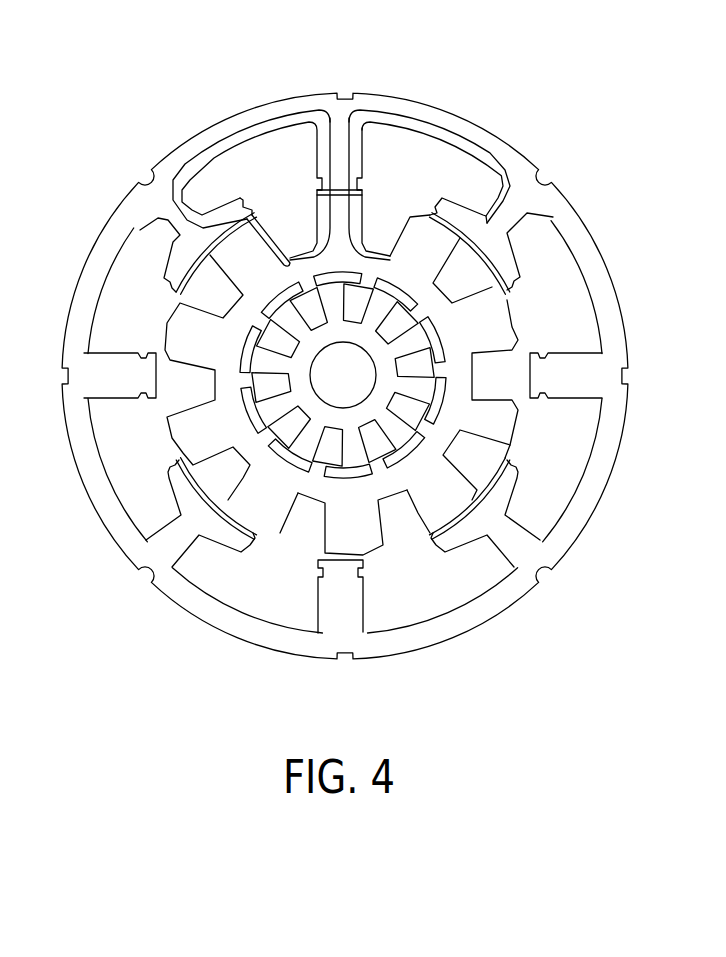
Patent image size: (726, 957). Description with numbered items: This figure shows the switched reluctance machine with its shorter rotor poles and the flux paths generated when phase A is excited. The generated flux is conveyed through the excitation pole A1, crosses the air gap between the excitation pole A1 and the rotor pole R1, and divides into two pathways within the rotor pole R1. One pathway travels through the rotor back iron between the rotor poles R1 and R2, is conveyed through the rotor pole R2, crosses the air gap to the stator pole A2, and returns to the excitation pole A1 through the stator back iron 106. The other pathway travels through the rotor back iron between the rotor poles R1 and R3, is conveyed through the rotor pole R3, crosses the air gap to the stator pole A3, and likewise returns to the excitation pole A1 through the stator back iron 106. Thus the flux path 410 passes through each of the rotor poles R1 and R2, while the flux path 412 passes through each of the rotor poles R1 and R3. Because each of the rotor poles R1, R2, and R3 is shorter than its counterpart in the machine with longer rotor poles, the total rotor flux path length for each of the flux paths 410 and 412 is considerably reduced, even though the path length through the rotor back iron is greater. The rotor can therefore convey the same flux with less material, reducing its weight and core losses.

The stator back iron 106 is at (333, 640).
The flux path 410 is at (273, 117).
The flux path 412 is at (398, 113).
The excitation pole A1 is at (365, 160).
The stator pole A2 is at (195, 200).
The stator pole A3 is at (515, 230).
The rotor pole R1 is at (363, 215).
The rotor pole R2 is at (267, 228).
The rotor pole R3 is at (453, 268).